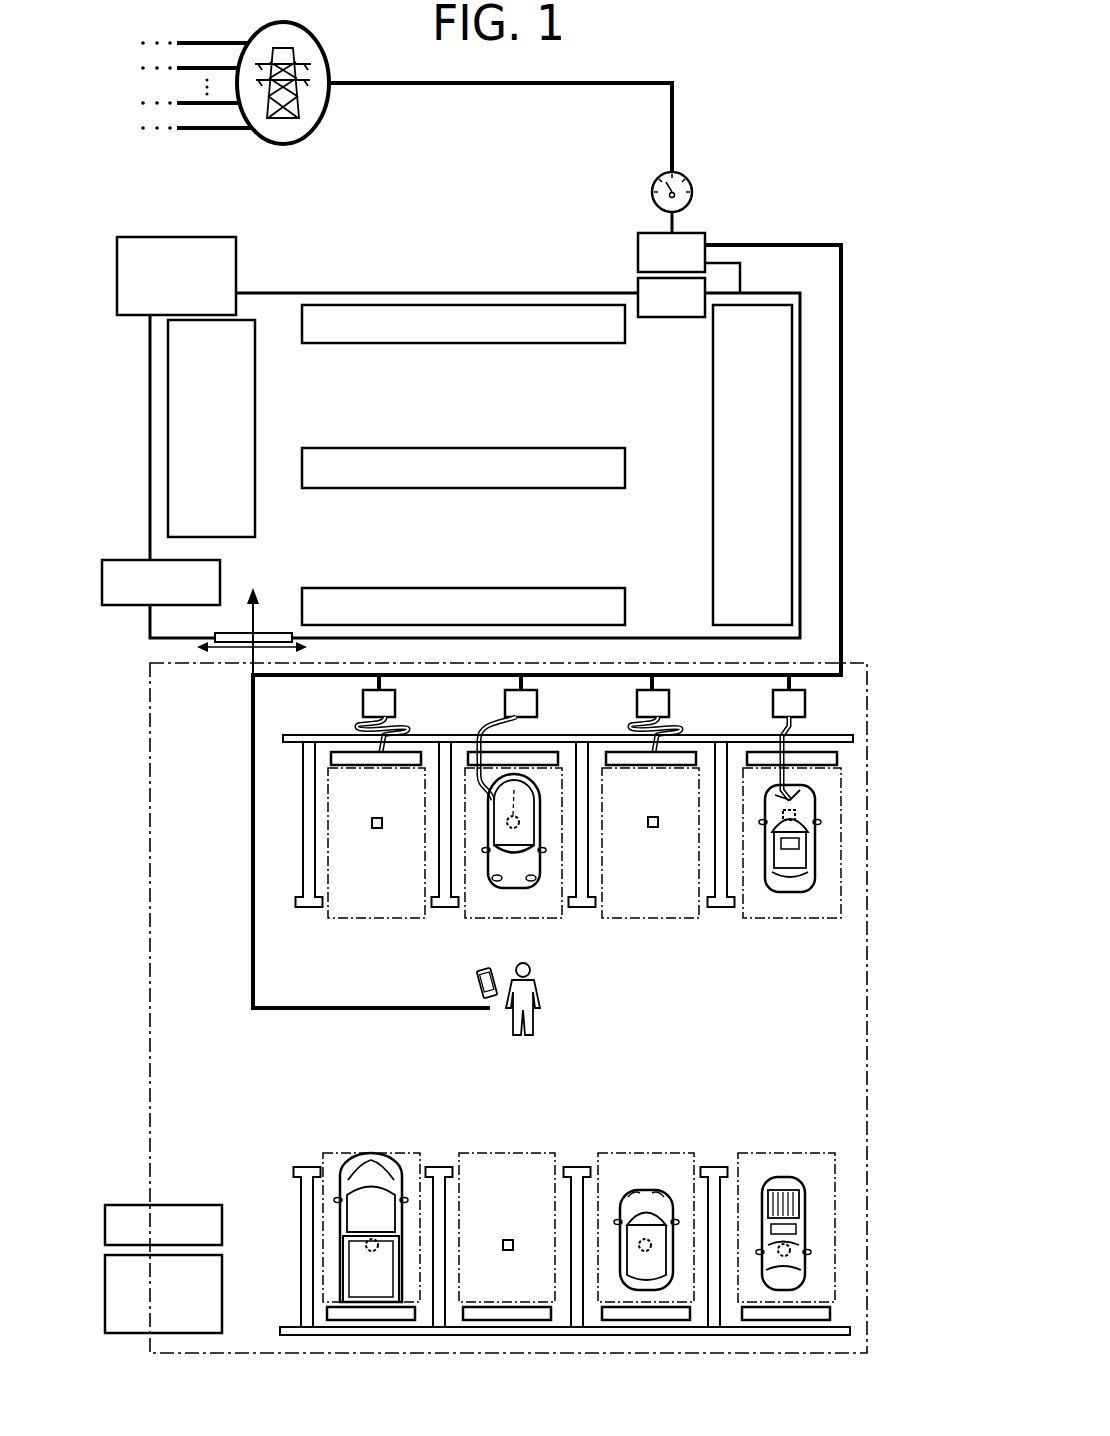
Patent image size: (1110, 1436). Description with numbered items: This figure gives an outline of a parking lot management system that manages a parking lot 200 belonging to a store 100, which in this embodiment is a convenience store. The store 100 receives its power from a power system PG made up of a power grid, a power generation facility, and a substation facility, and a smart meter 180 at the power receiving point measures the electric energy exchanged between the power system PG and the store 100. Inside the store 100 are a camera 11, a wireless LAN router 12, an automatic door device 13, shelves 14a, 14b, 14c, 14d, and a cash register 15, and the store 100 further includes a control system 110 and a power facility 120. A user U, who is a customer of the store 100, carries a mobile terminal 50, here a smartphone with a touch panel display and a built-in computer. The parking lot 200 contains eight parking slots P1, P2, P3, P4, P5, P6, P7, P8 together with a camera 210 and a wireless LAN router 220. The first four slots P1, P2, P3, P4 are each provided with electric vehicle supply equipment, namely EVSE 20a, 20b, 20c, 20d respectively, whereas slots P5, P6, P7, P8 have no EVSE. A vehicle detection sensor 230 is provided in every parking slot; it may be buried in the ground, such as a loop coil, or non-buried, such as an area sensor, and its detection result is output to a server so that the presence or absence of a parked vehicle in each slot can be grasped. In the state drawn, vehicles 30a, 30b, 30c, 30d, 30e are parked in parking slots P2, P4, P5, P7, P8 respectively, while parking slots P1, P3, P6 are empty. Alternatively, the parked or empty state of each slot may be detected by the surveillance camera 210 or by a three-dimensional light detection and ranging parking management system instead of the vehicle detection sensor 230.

The power system PG is at (300, 24).
The smart meter 180 is at (688, 172).
The power facility 120 is at (700, 233).
The control system 110 is at (638, 287).
The store 100 is at (515, 293).
The wireless LAN router 12 is at (197, 237).
The cash register 15 is at (168, 445).
The camera 11 is at (116, 558).
The automatic door device 13 is at (237, 633).
The shelf 14a is at (575, 588).
The shelf 14b is at (578, 448).
The shelf 14c is at (600, 343).
The shelf 14d is at (713, 522).
The parking lot 200 is at (867, 665).
The EVSE 20a is at (363, 705).
The EVSE 20b is at (505, 706).
The EVSE 20c is at (637, 702).
The EVSE 20d is at (773, 706).
The vehicle detection sensor 230 is at (377, 831).
The vehicle 30a is at (538, 872).
The vehicle 30b is at (812, 868).
The vehicle 30c is at (372, 1153).
The vehicle 30d is at (645, 1190).
The vehicle 30e is at (785, 1177).
The parking slot P1 is at (347, 918).
The parking slot P2 is at (483, 918).
The parking slot P3 is at (626, 918).
The parking slot P4 is at (768, 918).
The parking slot P5 is at (350, 1153).
The parking slot P6 is at (505, 1153).
The parking slot P7 is at (626, 1153).
The parking slot P8 is at (810, 1153).
The mobile terminal 50 is at (486, 967).
The user U is at (520, 967).
The camera 210 is at (198, 1205).
The wireless LAN router 220 is at (222, 1292).